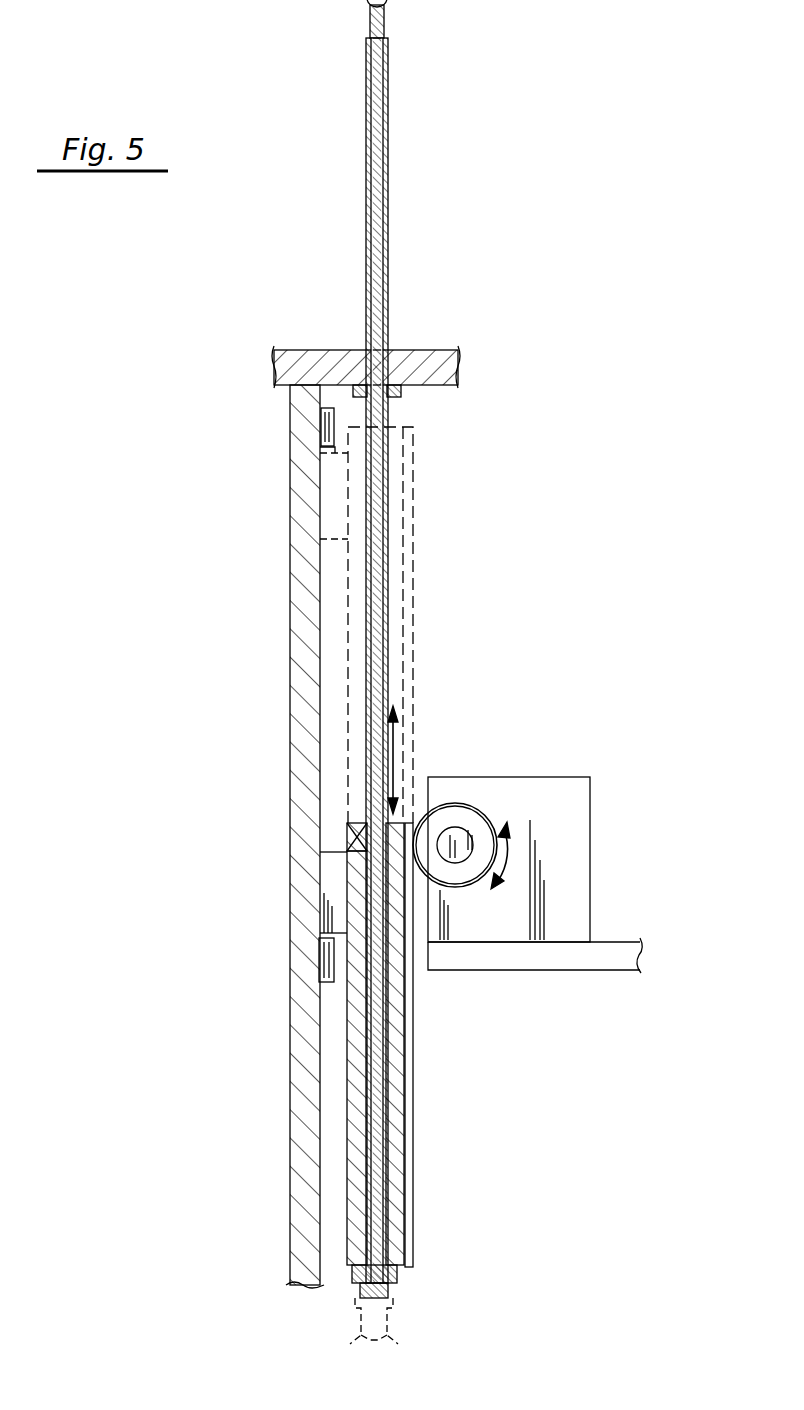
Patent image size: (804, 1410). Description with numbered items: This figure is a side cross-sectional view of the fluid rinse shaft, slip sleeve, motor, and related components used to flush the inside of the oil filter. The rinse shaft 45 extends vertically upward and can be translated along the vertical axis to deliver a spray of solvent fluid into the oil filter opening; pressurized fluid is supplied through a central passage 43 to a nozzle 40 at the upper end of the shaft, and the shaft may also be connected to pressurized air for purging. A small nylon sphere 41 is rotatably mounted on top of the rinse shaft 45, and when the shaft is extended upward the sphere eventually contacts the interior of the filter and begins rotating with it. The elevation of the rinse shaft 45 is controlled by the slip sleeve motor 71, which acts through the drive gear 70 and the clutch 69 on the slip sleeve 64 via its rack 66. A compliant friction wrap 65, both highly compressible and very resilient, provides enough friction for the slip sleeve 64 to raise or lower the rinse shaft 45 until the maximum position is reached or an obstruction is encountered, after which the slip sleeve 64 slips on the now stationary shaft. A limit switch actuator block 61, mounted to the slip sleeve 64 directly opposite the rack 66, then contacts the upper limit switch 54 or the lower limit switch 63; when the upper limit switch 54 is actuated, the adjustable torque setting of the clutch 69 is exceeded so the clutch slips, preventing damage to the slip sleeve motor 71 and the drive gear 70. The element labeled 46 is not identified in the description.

The nozzle 40 is at (371, 27).
The nylon sphere 41 is at (367, 2).
The central passage 43 is at (397, 1280).
The rinse shaft 45 is at (384, 508).
The tube 46 is at (389, 219).
The upper limit switch 54 is at (323, 422).
The limit switch actuator block 61 is at (330, 890).
The lower limit switch 63 is at (325, 975).
The slip sleeve 64 is at (395, 1130).
The compliant friction wrap 65 is at (350, 826).
The rack 66 is at (413, 1062).
The clutch 69 is at (456, 862).
The drive gear 70 is at (472, 803).
The slip sleeve motor 71 is at (565, 828).